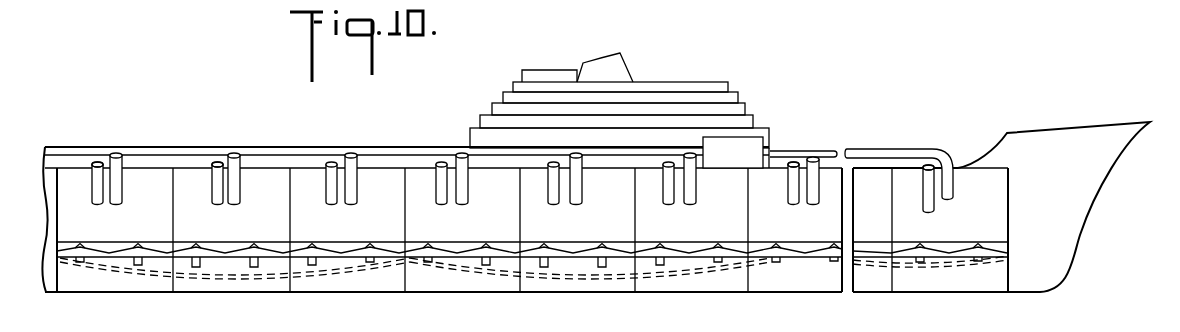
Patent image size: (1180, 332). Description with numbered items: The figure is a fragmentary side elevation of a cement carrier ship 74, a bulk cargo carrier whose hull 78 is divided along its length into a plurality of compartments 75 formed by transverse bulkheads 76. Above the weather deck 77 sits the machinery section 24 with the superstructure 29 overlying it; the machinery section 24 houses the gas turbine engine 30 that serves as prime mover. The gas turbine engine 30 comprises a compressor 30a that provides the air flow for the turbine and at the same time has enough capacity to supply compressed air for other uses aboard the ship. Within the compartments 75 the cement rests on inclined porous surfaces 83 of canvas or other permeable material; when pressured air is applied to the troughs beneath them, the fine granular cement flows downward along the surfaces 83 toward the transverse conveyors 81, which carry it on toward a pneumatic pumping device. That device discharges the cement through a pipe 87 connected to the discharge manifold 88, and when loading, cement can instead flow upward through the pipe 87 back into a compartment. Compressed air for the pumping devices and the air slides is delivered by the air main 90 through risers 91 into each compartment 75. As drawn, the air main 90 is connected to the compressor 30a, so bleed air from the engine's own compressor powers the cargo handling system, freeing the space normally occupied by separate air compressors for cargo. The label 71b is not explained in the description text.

The cement carrier ship 74 is at (302, 305).
The compartments 75 is at (119, 225).
The transverse bulkheads 76 is at (173, 215).
The weather deck 77 is at (380, 166).
The hull 78 is at (591, 293).
The transverse conveyors 81 is at (488, 266).
The inclined porous surfaces 83 is at (108, 246).
The pipe 87 is at (92, 189).
The discharge manifold 88 is at (97, 161).
The air main 90 is at (888, 150).
The risers 91 is at (122, 188).
The superstructure 29 is at (763, 90).
The machinery section 24 is at (698, 138).
The gas turbine engine 30 is at (742, 131).
The compressor 30a is at (756, 143).
The double bottom 71b is at (451, 331).